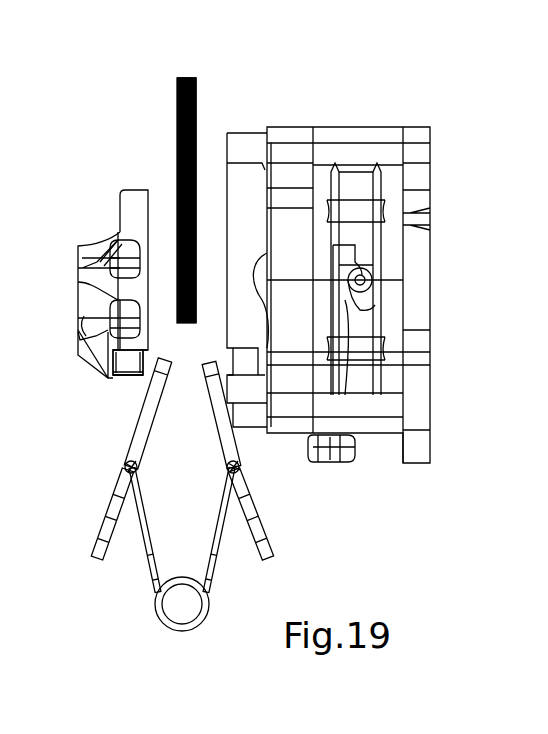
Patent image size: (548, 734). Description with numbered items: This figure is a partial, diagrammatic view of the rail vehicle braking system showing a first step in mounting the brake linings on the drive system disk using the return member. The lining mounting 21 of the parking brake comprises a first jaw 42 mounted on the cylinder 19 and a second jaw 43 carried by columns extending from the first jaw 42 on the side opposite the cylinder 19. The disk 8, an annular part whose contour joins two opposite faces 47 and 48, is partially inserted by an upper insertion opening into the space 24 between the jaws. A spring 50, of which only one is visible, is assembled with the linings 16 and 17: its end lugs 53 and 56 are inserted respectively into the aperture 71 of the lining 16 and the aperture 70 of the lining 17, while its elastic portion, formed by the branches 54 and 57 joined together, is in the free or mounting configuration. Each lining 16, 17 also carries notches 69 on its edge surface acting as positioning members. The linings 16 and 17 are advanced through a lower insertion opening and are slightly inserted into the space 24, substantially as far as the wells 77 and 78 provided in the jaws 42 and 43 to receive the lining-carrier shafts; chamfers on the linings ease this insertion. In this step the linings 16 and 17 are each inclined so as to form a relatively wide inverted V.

The disk 8 is at (185, 78).
The lining 16 is at (252, 500).
The lining 17 is at (132, 447).
The cylinder 19 is at (360, 143).
The lining mounting 21 is at (120, 212).
The space 24 is at (155, 168).
The first jaw 42 is at (262, 188).
The second jaw 43 is at (110, 288).
The face 47 is at (177, 100).
The face 48 is at (196, 100).
The spring 50 is at (162, 618).
The end lug 53 is at (230, 467).
The branch 54 is at (216, 553).
The end lug 56 is at (126, 469).
The branch 57 is at (152, 552).
The notches 69 is at (100, 535).
The aperture 70 is at (124, 466).
The aperture 71 is at (240, 469).
The well 77 is at (340, 450).
The well 78 is at (113, 370).